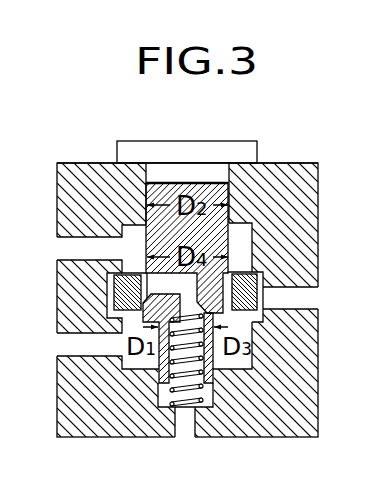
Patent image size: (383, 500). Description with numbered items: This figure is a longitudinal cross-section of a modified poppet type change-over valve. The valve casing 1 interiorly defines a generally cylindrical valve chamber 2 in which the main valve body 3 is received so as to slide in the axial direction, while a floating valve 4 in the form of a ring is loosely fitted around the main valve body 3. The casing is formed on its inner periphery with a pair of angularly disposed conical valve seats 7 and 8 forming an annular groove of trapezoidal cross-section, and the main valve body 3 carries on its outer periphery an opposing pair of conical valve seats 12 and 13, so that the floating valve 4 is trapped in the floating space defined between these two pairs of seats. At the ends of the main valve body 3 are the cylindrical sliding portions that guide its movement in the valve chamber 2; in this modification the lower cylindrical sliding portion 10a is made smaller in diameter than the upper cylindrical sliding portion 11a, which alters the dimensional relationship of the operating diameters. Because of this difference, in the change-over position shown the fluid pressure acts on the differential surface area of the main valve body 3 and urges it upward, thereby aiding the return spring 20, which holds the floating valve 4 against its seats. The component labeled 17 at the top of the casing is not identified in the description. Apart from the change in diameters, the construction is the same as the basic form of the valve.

The valve casing 1 is at (285, 162).
The valve chamber 2 is at (243, 233).
The main valve body 3 is at (197, 183).
The floating valve 4 is at (110, 291).
The conical valve seat 7 is at (255, 318).
The conical valve seat 8 is at (267, 278).
The lower cylindrical sliding portion 10a is at (163, 364).
The upper cylindrical sliding portion 11a is at (172, 190).
The conical valve seat 12 is at (147, 255).
The conical valve seat 13 is at (147, 310).
The cap 17 is at (130, 150).
The return spring 20 is at (190, 405).